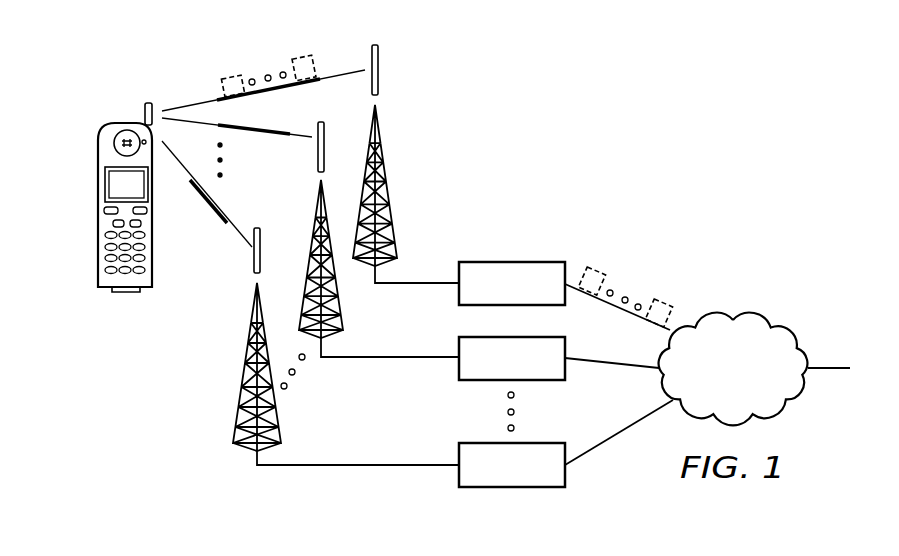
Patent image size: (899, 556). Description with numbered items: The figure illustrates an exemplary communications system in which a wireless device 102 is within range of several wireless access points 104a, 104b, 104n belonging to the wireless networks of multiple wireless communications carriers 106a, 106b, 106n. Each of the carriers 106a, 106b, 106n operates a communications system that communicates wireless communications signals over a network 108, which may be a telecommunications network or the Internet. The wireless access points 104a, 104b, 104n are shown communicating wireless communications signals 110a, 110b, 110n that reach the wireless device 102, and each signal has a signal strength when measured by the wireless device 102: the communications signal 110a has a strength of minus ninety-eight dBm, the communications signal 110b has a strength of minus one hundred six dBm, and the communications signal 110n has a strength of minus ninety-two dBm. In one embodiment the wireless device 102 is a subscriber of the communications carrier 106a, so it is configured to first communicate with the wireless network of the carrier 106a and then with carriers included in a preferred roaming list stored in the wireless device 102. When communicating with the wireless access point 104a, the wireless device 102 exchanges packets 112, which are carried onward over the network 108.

The wireless device 102 is at (97, 200).
The wireless access point 104a is at (393, 214).
The wireless access point 104b is at (343, 328).
The wireless access point 104n is at (236, 392).
The wireless communications carrier 106a is at (522, 262).
The wireless communications carrier 106b is at (540, 380).
The wireless communications carrier 106n is at (522, 487).
The network 108 is at (765, 318).
The wireless communications signal 110a is at (192, 103).
The wireless communications signal 110b is at (265, 132).
The wireless communications signal 110n is at (226, 218).
The packets 112 is at (302, 57).